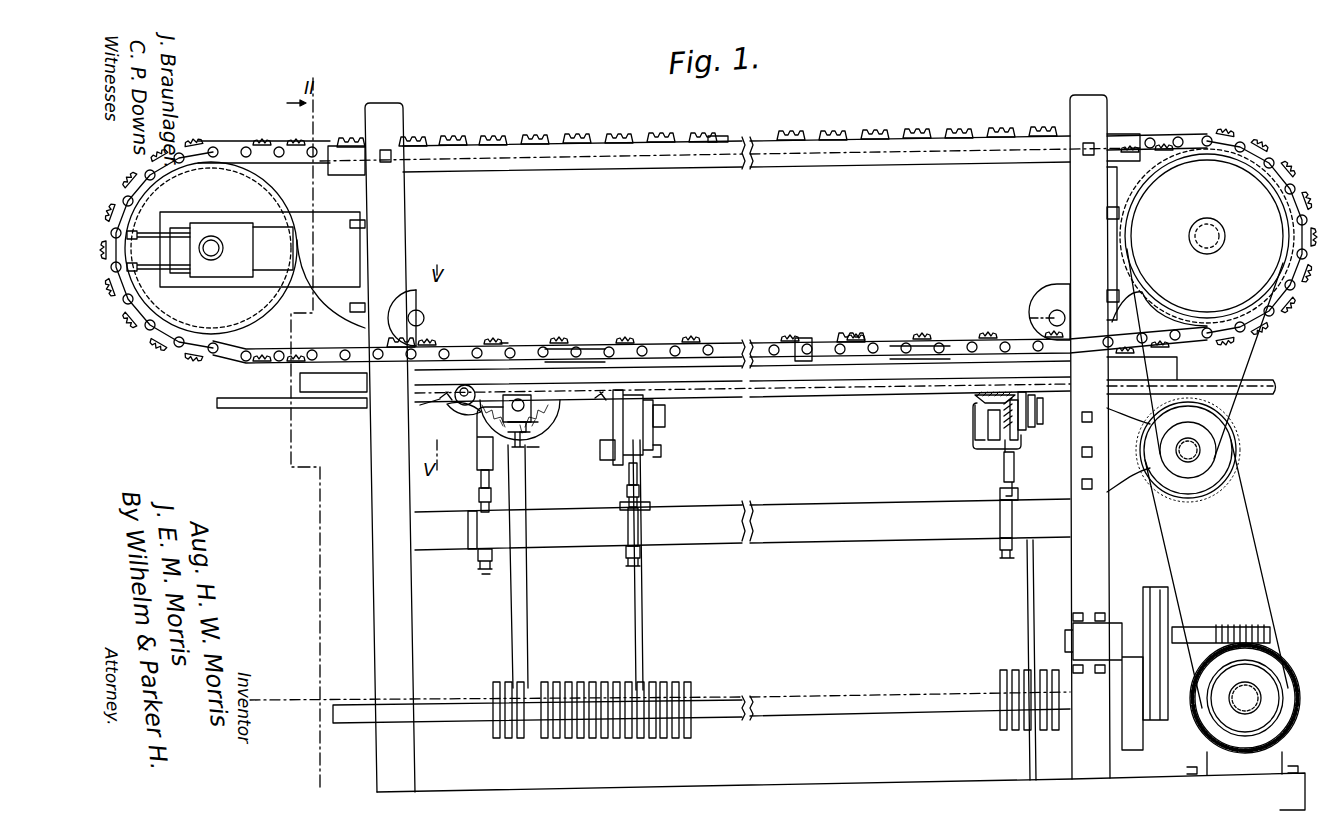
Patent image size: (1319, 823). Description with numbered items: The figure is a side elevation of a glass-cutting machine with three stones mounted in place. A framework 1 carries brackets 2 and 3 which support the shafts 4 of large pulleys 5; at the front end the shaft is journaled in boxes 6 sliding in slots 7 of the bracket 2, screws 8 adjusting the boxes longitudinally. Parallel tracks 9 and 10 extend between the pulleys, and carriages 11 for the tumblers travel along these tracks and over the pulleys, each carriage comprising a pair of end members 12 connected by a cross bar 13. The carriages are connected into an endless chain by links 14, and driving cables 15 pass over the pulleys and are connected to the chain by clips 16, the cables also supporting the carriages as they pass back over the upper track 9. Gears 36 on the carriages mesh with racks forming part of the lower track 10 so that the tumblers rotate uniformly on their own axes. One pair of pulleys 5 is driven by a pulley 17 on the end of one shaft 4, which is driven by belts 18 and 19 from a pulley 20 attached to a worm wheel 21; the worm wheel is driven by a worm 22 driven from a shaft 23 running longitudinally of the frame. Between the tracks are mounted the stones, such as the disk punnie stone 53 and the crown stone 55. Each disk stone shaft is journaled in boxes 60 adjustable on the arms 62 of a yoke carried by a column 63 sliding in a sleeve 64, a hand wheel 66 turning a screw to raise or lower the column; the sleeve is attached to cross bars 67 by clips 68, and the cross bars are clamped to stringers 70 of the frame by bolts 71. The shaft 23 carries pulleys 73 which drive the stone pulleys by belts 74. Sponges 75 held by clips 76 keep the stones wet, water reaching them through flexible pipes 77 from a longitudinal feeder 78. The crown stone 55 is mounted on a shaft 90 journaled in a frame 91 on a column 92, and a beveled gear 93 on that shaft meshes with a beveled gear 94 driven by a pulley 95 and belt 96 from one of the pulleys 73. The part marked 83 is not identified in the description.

The framework 1 is at (375, 489).
The bracket 2 is at (328, 216).
The bracket 3 is at (1128, 200).
The shaft 4 is at (215, 240).
The large pulley 5 is at (225, 285).
The box 6 is at (240, 220).
The slot 7 is at (268, 281).
The screw 8 is at (150, 240).
The upper track 9 is at (701, 171).
The lower track 10 is at (682, 347).
The carriage 11 is at (265, 368).
The end member 12 is at (585, 349).
The cross bar 13 is at (268, 148).
The link 14 is at (648, 138).
The driving cable 15 is at (504, 343).
The clip 16 is at (709, 139).
The pulley 17 is at (1207, 236).
The belt 18 is at (1248, 358).
The belt 19 is at (1250, 480).
The pulley 20 is at (1210, 715).
The worm wheel 21 is at (1285, 654).
The worm 22 is at (1235, 626).
The shaft 23 is at (812, 698).
The gear 36 is at (550, 138).
The punnie stone 53 is at (544, 420).
The crown stone 55 is at (950, 400).
The box 60 is at (482, 442).
The arm 62 is at (550, 440).
The column 63 is at (480, 471).
The sleeve 64 is at (479, 493).
The hand wheel 66 is at (482, 574).
The cross bar 67 is at (620, 508).
The clip 68 is at (1020, 492).
The stringer 70 is at (742, 524).
The bolt 71 is at (468, 527).
The pulley 73 is at (678, 680).
The belt 74 is at (528, 590).
The sponge 75 is at (448, 416).
The clip 76 is at (468, 393).
The flexible pipe 77 is at (447, 406).
The feeder 78 is at (328, 408).
The bracket 83 is at (654, 450).
The shaft 90 is at (985, 426).
The frame 91 is at (975, 449).
The column 92 is at (1002, 474).
The beveled gear 93 is at (996, 398).
The beveled gear 94 is at (1020, 432).
The pulley 95 is at (1034, 404).
The belt 96 is at (1027, 597).